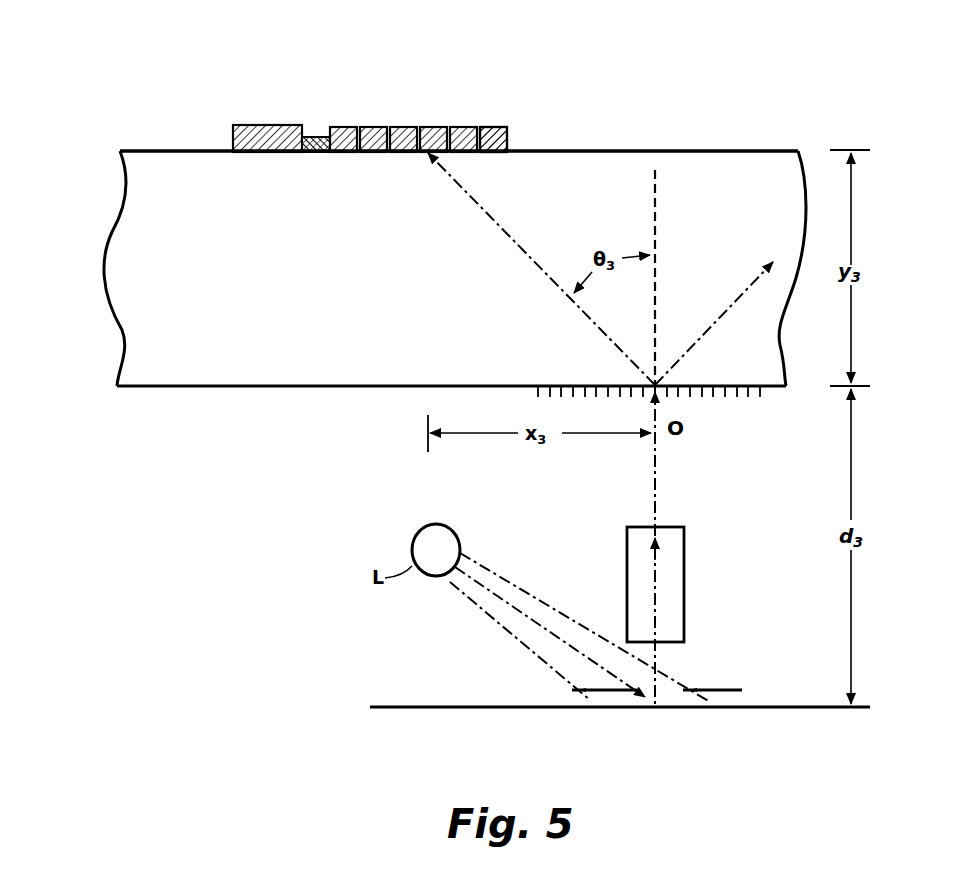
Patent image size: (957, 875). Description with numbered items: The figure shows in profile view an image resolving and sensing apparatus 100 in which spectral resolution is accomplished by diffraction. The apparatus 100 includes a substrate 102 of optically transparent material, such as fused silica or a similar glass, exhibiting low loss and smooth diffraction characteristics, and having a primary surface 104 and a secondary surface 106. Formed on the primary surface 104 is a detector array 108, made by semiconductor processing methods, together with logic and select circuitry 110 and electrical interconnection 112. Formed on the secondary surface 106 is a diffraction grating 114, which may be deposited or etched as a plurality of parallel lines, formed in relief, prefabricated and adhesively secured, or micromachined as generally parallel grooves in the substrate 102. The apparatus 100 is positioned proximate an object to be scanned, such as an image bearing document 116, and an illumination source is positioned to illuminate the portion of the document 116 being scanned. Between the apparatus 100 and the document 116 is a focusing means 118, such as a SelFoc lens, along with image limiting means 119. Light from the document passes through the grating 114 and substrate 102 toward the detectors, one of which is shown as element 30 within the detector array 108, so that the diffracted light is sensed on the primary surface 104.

The image resolving and sensing apparatus 100 is at (163, 67).
The substrate 102 is at (163, 377).
The primary surface 104 is at (702, 149).
The secondary surface 106 is at (233, 389).
The detector array 108 is at (497, 109).
The logic and select circuitry 110 is at (262, 125).
The electrical interconnection 112 is at (318, 136).
The pattern element 30 is at (508, 128).
The diffraction grating 114 is at (722, 394).
The image bearing document 116 is at (428, 706).
The focusing means 118 is at (683, 603).
The aperture plate 119 is at (710, 688).